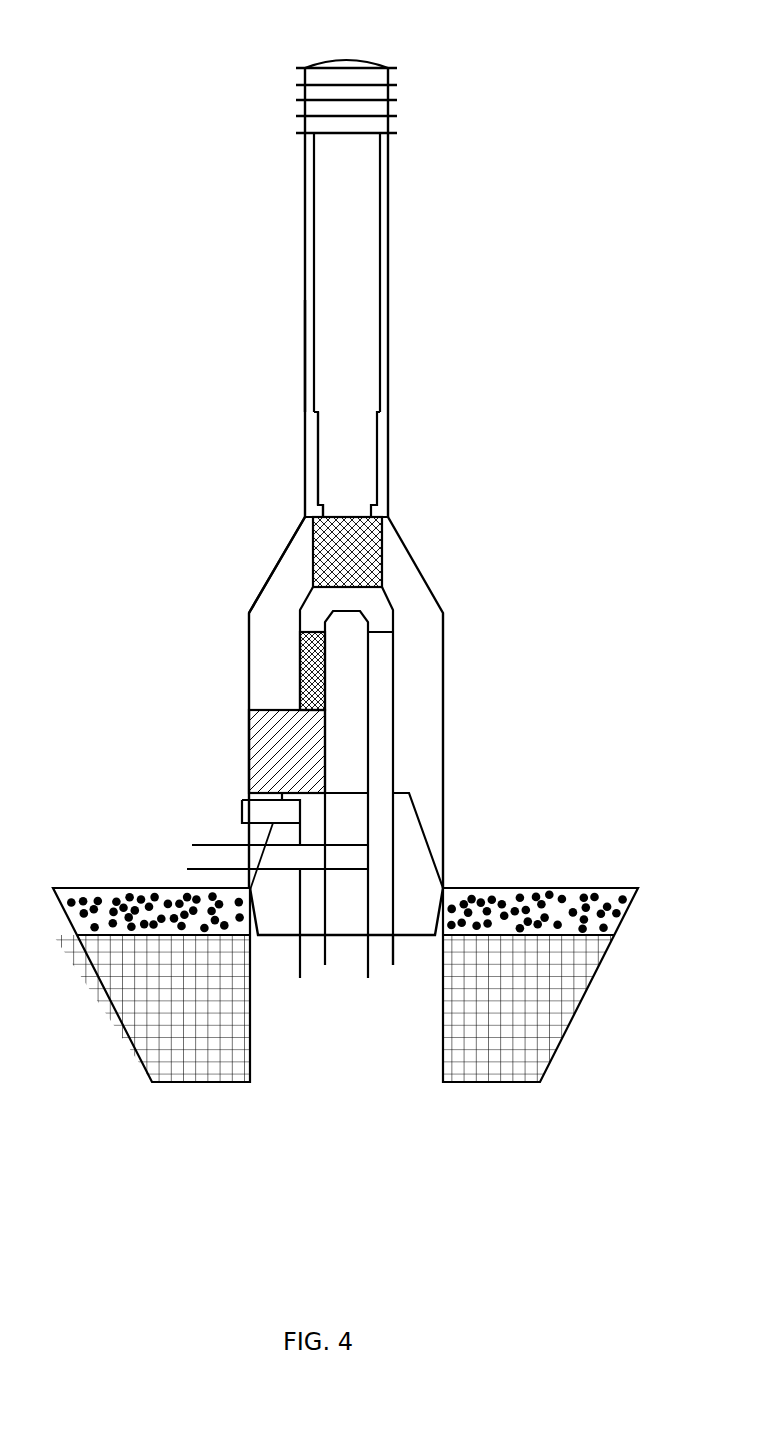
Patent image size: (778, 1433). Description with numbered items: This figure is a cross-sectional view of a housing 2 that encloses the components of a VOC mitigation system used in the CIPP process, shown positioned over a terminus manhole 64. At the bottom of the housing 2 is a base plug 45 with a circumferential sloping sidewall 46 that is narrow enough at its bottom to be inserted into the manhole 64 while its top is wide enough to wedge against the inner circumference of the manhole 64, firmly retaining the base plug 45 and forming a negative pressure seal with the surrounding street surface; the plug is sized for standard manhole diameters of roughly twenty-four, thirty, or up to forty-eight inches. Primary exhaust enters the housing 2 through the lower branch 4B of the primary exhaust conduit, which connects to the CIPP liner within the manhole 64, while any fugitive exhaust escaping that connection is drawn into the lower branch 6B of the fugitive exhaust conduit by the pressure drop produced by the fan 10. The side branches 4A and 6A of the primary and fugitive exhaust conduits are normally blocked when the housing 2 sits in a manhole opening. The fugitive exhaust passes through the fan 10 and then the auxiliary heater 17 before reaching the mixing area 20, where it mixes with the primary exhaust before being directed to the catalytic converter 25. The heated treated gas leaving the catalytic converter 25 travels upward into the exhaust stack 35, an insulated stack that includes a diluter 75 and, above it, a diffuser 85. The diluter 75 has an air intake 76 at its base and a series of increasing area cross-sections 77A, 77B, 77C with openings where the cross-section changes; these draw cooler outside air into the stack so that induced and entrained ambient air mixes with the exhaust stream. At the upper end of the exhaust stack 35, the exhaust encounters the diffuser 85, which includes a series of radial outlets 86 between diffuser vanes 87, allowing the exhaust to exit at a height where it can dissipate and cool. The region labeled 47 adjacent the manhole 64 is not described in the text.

The housing 2 is at (510, 640).
The diffuser 85 is at (410, 100).
The radial outlets 86 is at (305, 116).
The diffuser vanes 87 is at (305, 85).
The exhaust stack 35 is at (416, 258).
The diluter 75 is at (416, 410).
The increasing area cross-section 77A is at (320, 504).
The increasing area cross-section 77B is at (318, 442).
The increasing area cross-section 77C is at (305, 365).
The air intake 76 is at (300, 520).
The catalytic converter 25 is at (398, 568).
The mixing area 20 is at (352, 595).
The auxiliary heater 17 is at (300, 675).
The fan 10 is at (253, 745).
The side branch 6A is at (246, 812).
The side branch 4A is at (192, 845).
The base plug 45 is at (432, 828).
The circumferential sloping sidewall 46 is at (440, 913).
The soil region 47 is at (271, 938).
The lower branch 6B is at (326, 965).
The lower branch 4B is at (396, 965).
The manhole 64 is at (284, 1117).